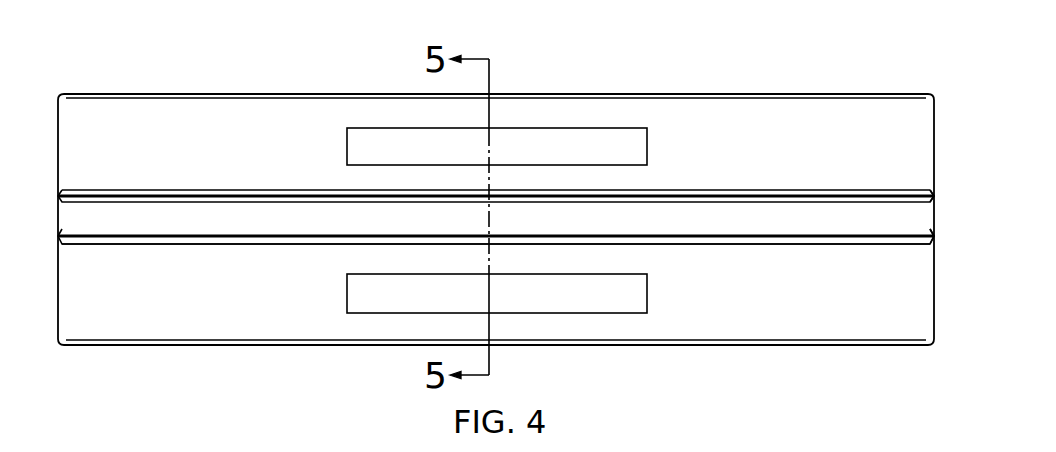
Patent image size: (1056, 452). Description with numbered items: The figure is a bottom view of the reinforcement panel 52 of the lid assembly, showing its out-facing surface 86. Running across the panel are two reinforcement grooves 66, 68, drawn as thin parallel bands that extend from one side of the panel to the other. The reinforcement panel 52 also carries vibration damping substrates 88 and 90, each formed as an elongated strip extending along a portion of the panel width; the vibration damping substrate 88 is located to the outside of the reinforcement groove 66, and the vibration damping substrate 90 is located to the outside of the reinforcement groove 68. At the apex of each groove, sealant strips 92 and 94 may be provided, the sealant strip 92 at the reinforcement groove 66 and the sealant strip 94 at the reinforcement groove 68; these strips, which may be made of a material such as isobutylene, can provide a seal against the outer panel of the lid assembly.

The reinforcement panel 52 is at (538, 187).
The out-facing surface 86 is at (185, 110).
The vibration damping substrate 88 is at (652, 147).
The vibration damping substrate 90 is at (648, 295).
The reinforcement groove 66 is at (802, 191).
The reinforcement groove 68 is at (797, 244).
The sealant strip 92 is at (936, 195).
The sealant strip 94 is at (936, 237).